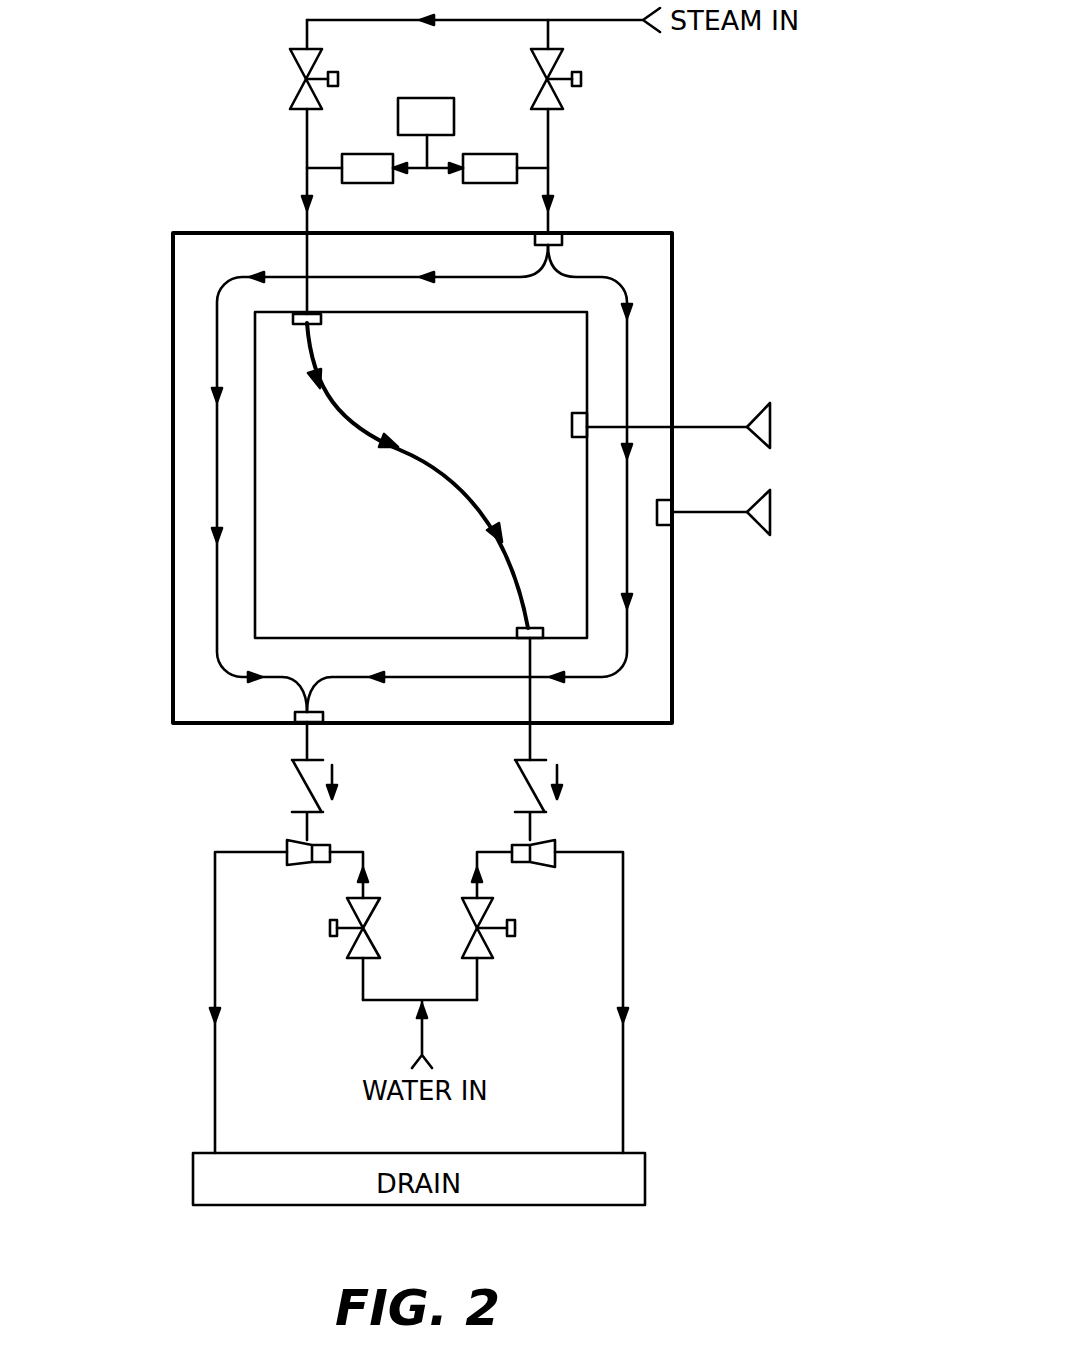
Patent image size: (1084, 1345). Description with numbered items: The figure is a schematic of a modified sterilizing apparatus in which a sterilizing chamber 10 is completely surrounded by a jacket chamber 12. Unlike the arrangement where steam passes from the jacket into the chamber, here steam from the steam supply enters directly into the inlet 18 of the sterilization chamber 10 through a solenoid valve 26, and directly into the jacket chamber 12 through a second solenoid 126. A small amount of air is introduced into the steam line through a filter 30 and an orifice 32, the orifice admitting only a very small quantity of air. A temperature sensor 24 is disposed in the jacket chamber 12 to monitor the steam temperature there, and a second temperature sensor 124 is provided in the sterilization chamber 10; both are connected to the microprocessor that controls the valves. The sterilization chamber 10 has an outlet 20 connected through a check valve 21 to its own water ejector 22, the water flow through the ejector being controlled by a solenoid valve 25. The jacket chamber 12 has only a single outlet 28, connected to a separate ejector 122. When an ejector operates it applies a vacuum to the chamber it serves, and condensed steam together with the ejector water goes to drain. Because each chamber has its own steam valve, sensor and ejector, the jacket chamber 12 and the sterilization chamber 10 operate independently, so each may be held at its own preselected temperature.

The sterilizing chamber 10 is at (570, 537).
The jacket chamber 12 is at (672, 337).
The inlet 18 is at (321, 320).
The outlet 20 is at (517, 629).
The check valve 21 is at (291, 776).
The water ejector 22 is at (556, 845).
The temperature sensor 24 is at (770, 512).
The solenoid valve 25 is at (378, 950).
The solenoid valve 26 is at (290, 86).
The single outlet 28 is at (295, 716).
The filter 30 is at (428, 98).
The orifice 32 is at (362, 183).
The separate ejector 122 is at (306, 864).
The second temperature sensor 124 is at (770, 427).
The second solenoid 126 is at (535, 86).